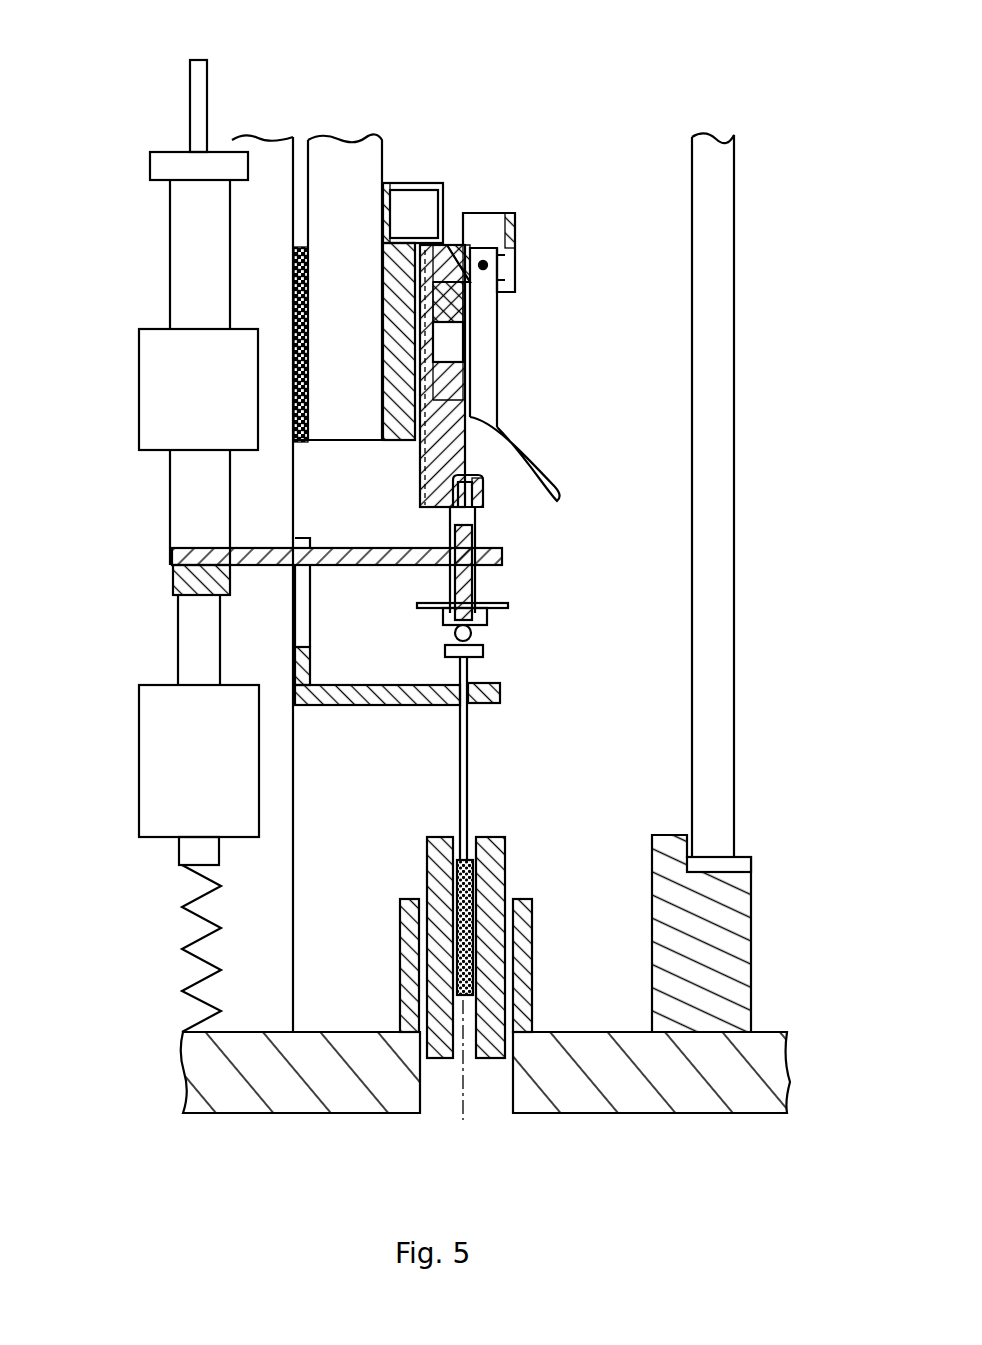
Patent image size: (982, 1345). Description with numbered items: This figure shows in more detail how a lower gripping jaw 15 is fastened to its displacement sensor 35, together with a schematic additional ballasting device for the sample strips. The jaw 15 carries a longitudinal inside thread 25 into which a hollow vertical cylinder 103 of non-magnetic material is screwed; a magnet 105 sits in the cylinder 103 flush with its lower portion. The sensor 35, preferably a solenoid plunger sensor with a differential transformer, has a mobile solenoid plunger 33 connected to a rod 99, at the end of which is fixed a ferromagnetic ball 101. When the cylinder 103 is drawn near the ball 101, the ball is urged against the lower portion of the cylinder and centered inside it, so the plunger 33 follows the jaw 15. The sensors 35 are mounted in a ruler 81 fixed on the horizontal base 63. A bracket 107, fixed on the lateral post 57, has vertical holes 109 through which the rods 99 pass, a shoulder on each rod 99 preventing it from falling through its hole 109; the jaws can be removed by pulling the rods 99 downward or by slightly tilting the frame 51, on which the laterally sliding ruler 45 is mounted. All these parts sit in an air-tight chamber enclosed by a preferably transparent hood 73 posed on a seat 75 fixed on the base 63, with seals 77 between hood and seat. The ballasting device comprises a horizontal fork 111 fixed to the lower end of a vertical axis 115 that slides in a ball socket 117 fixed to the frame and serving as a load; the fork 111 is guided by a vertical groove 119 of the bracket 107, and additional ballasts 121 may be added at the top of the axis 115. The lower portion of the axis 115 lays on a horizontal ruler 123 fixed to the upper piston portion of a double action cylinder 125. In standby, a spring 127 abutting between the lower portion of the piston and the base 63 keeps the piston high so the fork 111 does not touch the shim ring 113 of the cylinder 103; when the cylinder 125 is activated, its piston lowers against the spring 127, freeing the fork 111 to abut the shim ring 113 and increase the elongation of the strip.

The lower gripping jaw 15 is at (526, 327).
The inside thread 25 is at (485, 500).
The solenoid plunger 33 is at (466, 872).
The displacement sensor 35 is at (492, 840).
The ruler 45 is at (437, 184).
The frame 51 is at (357, 212).
The lateral post 57 is at (263, 153).
The horizontal base 63 is at (663, 1098).
The hood 73 is at (720, 463).
The seat 75 is at (737, 938).
The seals 77 is at (738, 862).
The ruler 81 is at (523, 955).
The rod 99 is at (470, 757).
The ball 101 is at (454, 639).
The hollow vertical cylinder 103 is at (468, 518).
The magnet 105 is at (467, 588).
The bracket 107 is at (340, 700).
The vertical holes 109 is at (473, 680).
The horizontal fork 111 is at (333, 540).
The shim ring 113 is at (507, 608).
The vertical axis 115 is at (226, 289).
The ball socket 117 is at (212, 409).
The vertical groove 119 is at (303, 622).
The additional ballasts 121 is at (170, 160).
The horizontal ruler 123 is at (175, 583).
The double action cylinder 125 is at (216, 781).
The spring 127 is at (183, 948).